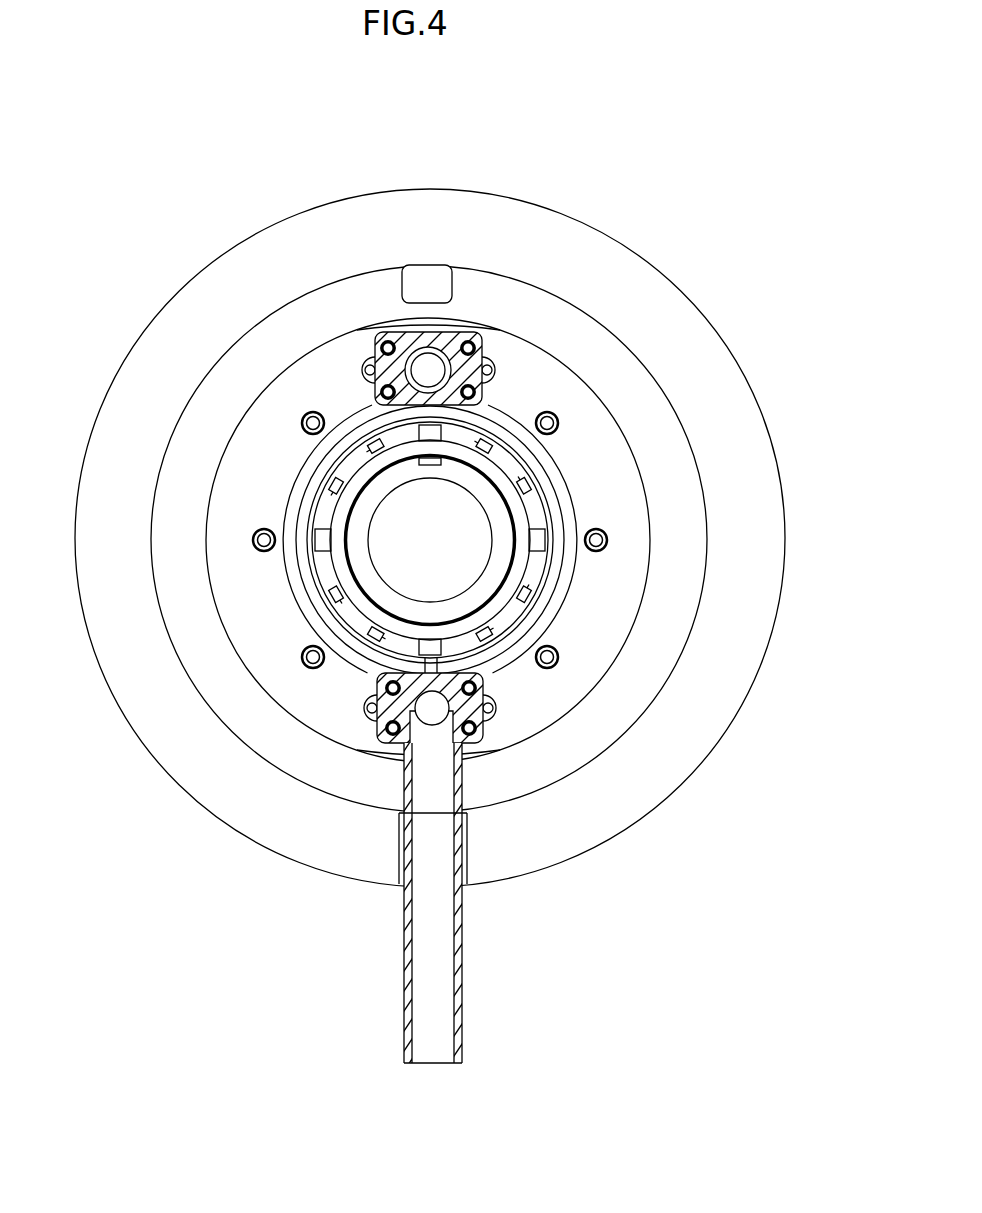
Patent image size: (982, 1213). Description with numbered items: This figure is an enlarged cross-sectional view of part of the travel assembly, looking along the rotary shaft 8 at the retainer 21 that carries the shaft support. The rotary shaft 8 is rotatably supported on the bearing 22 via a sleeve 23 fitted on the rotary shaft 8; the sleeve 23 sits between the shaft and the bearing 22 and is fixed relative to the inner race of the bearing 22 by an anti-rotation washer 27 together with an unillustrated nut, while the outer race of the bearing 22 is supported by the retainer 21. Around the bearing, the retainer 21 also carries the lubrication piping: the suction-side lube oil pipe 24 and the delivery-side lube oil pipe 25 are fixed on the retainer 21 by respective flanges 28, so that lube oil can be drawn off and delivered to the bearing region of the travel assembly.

The rotary shaft 8 is at (390, 558).
The retainer 21 is at (550, 378).
The bearing 22 is at (540, 517).
The sleeve 23 is at (497, 567).
The suction-side lube oil pipe 24 is at (442, 947).
The delivery-side lube oil pipe 25 is at (430, 380).
The anti-rotation washer 27 is at (460, 627).
The flange 28 is at (380, 357).